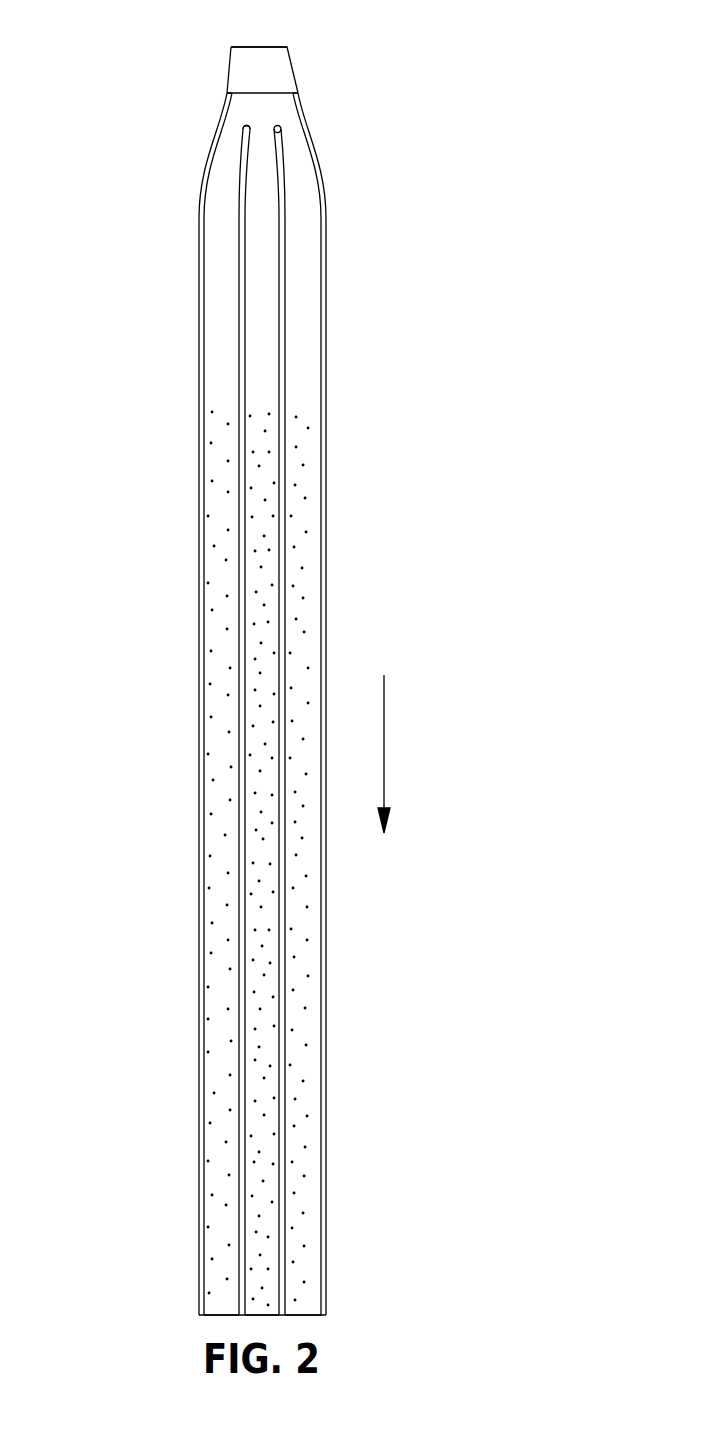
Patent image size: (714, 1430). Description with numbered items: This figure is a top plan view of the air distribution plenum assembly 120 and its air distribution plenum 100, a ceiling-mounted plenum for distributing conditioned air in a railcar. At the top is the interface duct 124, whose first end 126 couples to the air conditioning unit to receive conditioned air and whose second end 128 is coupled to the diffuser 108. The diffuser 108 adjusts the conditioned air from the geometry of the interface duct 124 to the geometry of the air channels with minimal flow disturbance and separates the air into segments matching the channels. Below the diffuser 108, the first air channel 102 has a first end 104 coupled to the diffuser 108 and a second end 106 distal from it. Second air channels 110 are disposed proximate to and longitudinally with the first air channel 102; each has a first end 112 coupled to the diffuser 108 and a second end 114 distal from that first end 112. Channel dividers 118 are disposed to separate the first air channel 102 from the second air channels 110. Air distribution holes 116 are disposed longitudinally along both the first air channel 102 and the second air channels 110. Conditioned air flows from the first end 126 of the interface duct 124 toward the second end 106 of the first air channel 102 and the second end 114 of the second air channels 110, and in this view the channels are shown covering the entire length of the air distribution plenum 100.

The air distribution plenum 100 is at (231, 662).
The first air channel 102 is at (262, 721).
The first end 104 is at (280, 114).
The second end 106 is at (253, 1293).
The diffuser 108 is at (237, 103).
The second air channel 110 is at (262, 704).
The first end 112 is at (202, 144).
The second end 114 is at (213, 1296).
The air distribution hole 116 is at (222, 415).
The channel divider 118 is at (240, 342).
The air distribution plenum assembly 120 is at (472, 98).
The interface duct 124 is at (282, 75).
The first end 126 is at (278, 29).
The second end 128 is at (256, 46).